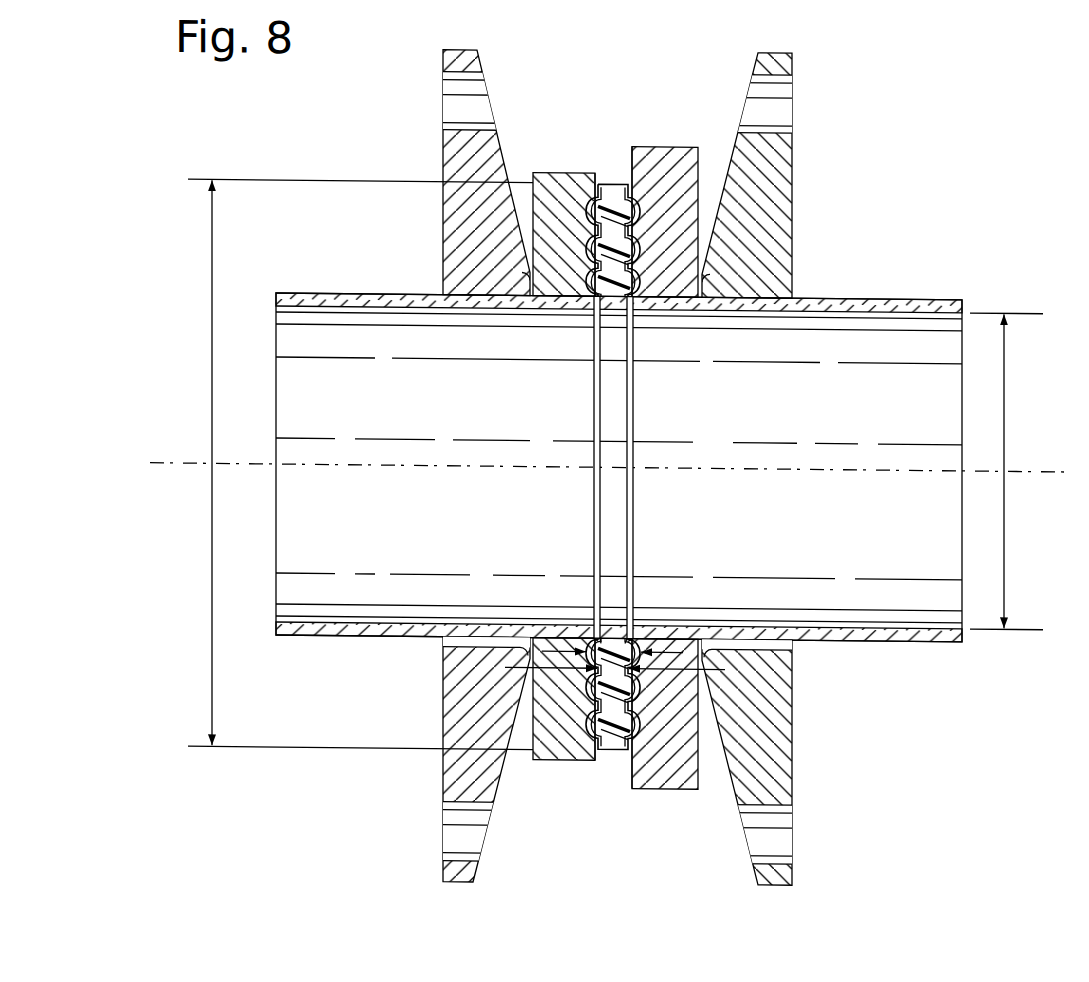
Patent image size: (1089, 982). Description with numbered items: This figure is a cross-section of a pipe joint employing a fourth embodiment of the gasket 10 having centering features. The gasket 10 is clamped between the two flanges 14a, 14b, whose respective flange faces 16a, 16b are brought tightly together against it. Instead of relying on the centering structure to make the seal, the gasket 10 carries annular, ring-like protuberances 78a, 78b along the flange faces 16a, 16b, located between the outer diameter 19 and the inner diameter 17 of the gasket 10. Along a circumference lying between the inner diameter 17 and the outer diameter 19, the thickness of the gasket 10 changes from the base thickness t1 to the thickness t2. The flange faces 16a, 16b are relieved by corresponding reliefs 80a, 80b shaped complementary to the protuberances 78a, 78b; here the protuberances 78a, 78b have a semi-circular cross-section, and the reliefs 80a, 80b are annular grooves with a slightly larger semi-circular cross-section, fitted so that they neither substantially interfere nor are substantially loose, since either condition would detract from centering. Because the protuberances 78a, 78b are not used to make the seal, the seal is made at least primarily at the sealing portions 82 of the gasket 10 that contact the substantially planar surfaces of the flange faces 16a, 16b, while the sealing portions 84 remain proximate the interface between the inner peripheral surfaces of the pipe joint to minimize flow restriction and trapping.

The gasket 10 is at (604, 82).
The flange 14a is at (648, 118).
The flange 14b is at (557, 150).
The flange face 16a is at (632, 244).
The flange face 16b is at (596, 234).
The inner diameter 17 is at (1004, 572).
The outer diameter 19 is at (212, 353).
The protuberance 78a is at (635, 297).
The protuberance 78b is at (590, 300).
The relief 80a is at (634, 266).
The relief 80b is at (598, 267).
The sealing portions 82 is at (640, 259).
The sealing portions 84 is at (579, 630).
The base thickness t1 is at (700, 665).
The thickness t2 is at (560, 648).